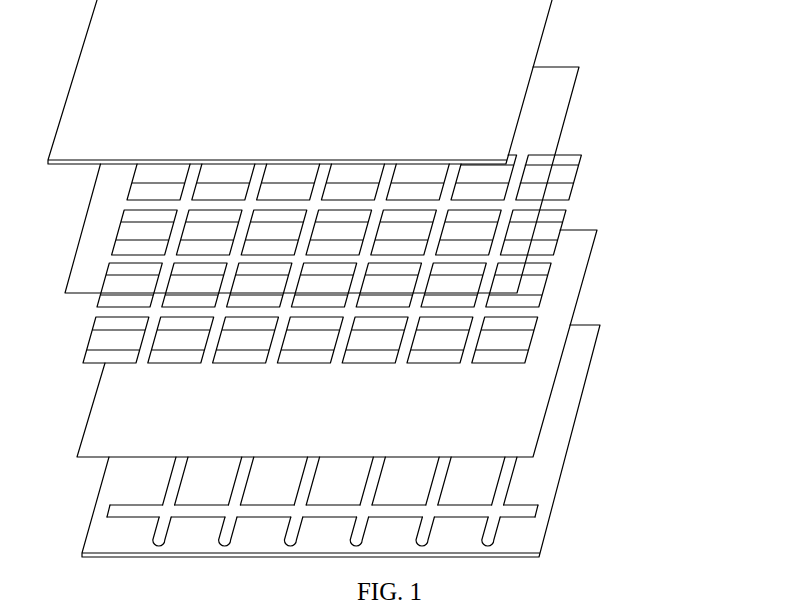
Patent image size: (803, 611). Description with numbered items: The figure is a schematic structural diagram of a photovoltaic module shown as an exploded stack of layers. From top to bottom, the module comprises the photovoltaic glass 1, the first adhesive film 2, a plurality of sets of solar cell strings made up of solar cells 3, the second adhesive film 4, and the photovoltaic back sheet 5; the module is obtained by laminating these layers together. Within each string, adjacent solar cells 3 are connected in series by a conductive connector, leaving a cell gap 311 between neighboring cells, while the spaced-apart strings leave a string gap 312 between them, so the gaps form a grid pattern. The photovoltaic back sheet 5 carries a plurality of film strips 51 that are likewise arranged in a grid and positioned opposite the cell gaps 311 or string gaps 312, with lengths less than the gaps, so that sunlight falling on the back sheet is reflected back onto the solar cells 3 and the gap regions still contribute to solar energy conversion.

The photovoltaic glass 1 is at (515, 12).
The first adhesive film 2 is at (553, 108).
The solar cells 3 is at (404, 259).
The string gap 312 is at (555, 203).
The cell gap 311 is at (473, 340).
The second adhesive film 4 is at (567, 278).
The photovoltaic back sheet 5 is at (394, 441).
The film strips 51 is at (523, 512).